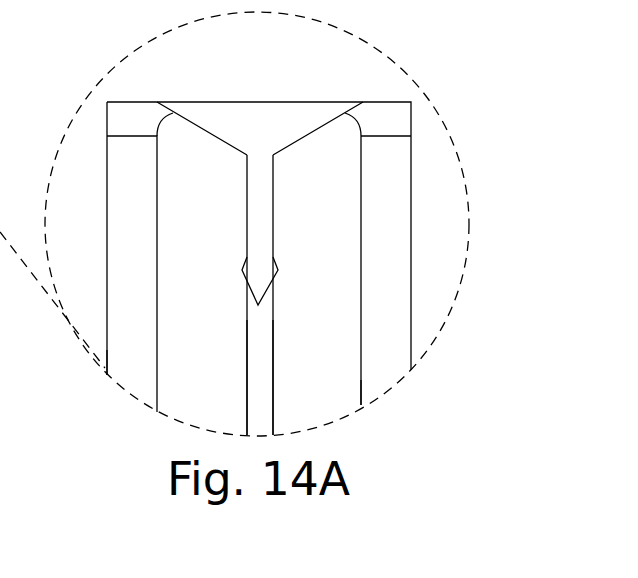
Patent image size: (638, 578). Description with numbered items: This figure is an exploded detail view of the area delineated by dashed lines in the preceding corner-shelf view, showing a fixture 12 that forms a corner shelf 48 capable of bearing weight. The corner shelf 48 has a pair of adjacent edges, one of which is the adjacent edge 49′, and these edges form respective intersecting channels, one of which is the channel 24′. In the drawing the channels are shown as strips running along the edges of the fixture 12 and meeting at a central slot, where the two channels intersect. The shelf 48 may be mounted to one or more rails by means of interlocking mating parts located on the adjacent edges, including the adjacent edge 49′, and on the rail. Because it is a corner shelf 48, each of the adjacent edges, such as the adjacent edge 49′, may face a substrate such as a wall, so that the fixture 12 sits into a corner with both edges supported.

The fixture 12 is at (411, 152).
The corner shelf 48 is at (411, 203).
The adjacent edge 49′ is at (347, 405).
The channel 24′ is at (273, 350).